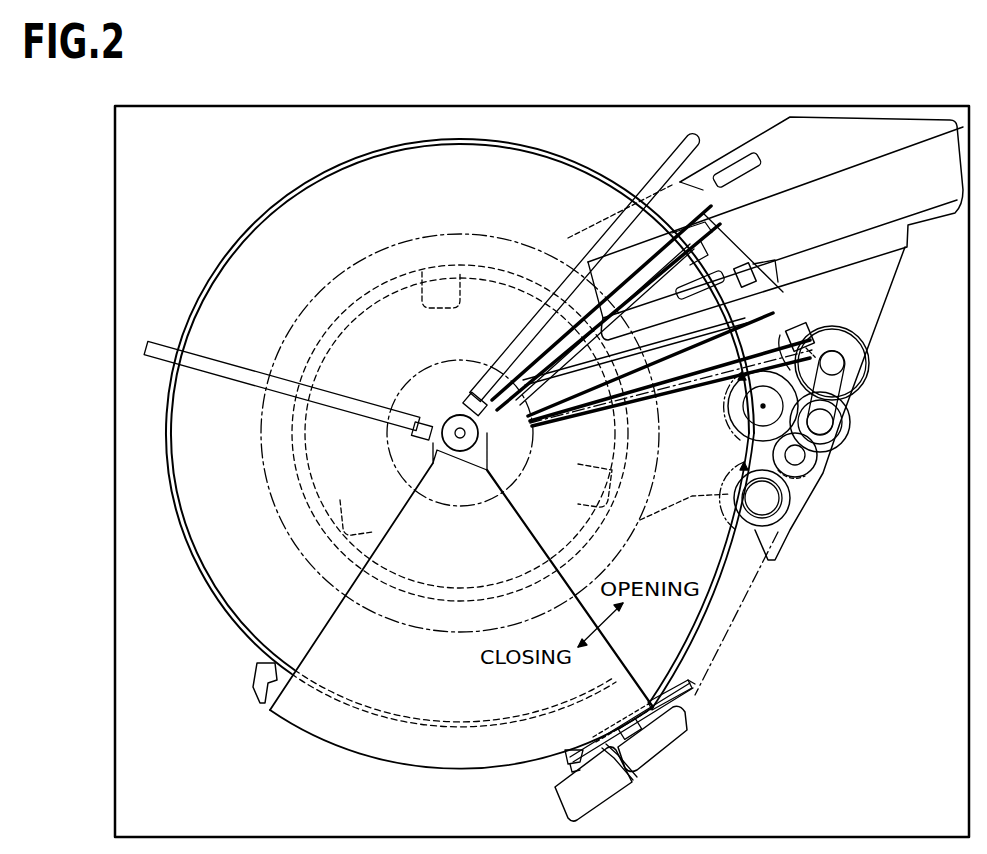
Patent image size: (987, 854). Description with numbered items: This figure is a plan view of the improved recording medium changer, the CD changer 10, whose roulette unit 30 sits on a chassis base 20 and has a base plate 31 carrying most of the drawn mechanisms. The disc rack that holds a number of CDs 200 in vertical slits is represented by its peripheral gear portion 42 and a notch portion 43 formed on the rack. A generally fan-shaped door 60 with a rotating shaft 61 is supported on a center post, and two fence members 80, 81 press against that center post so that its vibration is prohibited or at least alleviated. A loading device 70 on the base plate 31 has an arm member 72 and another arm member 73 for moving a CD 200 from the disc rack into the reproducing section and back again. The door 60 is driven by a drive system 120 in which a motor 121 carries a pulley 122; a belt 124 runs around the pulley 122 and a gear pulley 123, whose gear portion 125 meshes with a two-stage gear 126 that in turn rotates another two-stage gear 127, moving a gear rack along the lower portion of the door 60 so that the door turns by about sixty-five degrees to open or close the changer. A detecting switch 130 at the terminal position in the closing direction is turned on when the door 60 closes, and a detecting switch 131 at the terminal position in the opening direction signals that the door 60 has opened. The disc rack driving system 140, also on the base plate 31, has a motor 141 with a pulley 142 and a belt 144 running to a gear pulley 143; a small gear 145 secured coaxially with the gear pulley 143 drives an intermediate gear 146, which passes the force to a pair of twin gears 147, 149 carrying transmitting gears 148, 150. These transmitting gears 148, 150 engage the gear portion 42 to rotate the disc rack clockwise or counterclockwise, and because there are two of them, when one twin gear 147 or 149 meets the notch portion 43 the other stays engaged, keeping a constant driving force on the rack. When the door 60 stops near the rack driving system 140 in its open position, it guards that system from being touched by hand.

The CD changer 10 is at (392, 102).
The chassis base 20 is at (626, 132).
The roulette unit 30 is at (471, 226).
The base plate 31 is at (703, 187).
The gear portion 42 is at (702, 610).
The notch portion 43 is at (748, 318).
The fan-shaped door 60 is at (366, 764).
The rotating shaft 61 is at (461, 430).
The loading device 70 is at (783, 170).
The arm member 72 is at (606, 308).
The arm member 73 is at (757, 263).
The fence member 80 is at (207, 356).
The fence member 81 is at (607, 230).
The drive system 120 is at (700, 725).
The motor 121 is at (563, 782).
The pulley 122 is at (565, 755).
The gear pulley 123 is at (610, 720).
The belt 124 is at (590, 740).
The gear portion 125 is at (618, 762).
The two-stage gear 126 is at (693, 690).
The two-stage gear 127 is at (695, 683).
The detecting switch 130 is at (246, 672).
The detecting switch 131 is at (800, 330).
The disc rack driving system 140 is at (812, 512).
The motor 141 is at (866, 356).
The pulley 142 is at (834, 356).
The gear pulley 143 is at (845, 426).
The belt 144 is at (848, 385).
The small gear 145 is at (822, 437).
The intermediate gear 146 is at (810, 490).
The twin gear 147 is at (768, 528).
The transmitting gear 148 is at (735, 520).
The twin gear 149 is at (725, 400).
The transmitting gear 150 is at (760, 418).
The CD 200 is at (712, 340).